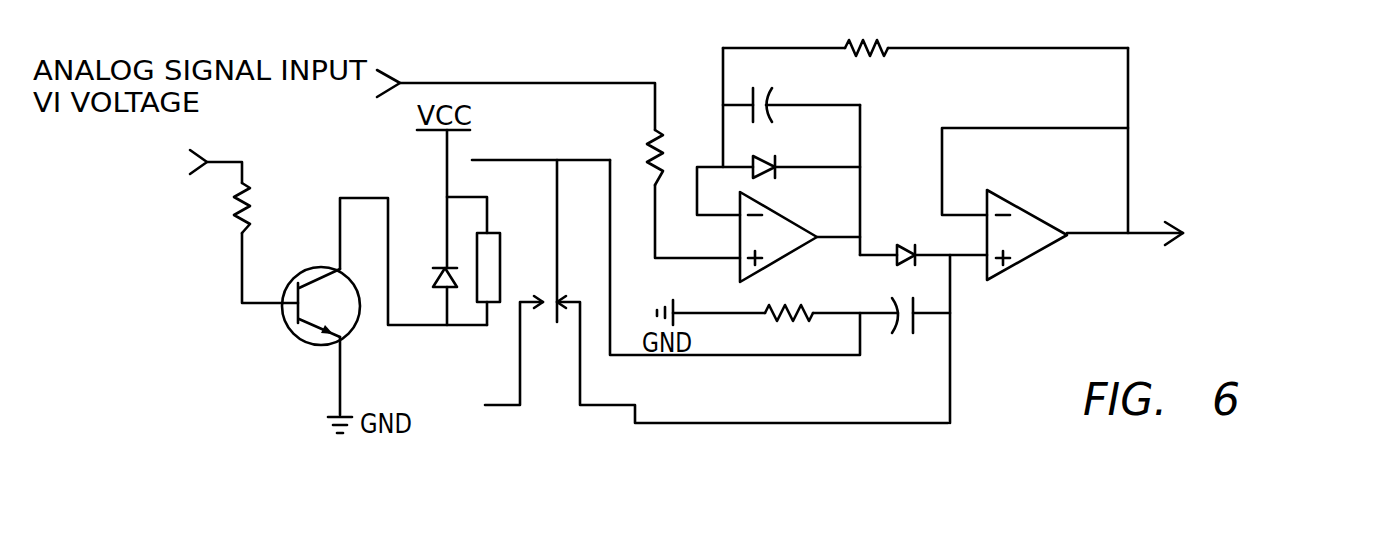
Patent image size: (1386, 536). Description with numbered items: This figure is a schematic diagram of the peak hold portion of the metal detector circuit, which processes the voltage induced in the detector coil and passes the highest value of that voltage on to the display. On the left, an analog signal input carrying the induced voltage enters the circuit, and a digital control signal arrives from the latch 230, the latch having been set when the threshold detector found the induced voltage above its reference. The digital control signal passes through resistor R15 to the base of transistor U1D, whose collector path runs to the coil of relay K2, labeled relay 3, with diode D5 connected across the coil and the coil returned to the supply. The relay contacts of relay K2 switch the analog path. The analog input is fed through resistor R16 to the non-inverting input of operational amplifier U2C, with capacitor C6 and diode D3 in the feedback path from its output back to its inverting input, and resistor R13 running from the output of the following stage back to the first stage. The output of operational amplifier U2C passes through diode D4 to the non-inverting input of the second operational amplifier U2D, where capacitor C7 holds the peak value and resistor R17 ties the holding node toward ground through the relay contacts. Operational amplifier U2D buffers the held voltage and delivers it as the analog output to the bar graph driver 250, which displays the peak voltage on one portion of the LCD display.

The latch 230 is at (137, 213).
The bar graph driver 250 is at (1223, 274).
The relay 3 is at (697, 263).
The relay K2 is at (697, 277).
The resistor R13 is at (925, 36).
The resistor R15 is at (268, 208).
The resistor R16 is at (677, 157).
The resistor R17 is at (785, 299).
The capacitor C6 is at (791, 93).
The capacitor C7 is at (918, 332).
The diode D3 is at (786, 155).
The diode D4 is at (923, 240).
The diode D5 is at (429, 263).
The transistor U1:D U1D is at (309, 309).
The operational amplifier U2:C (LM324J) U2C is at (731, 240).
The operational amplifier U2:D (LM324J) U2D is at (1034, 246).